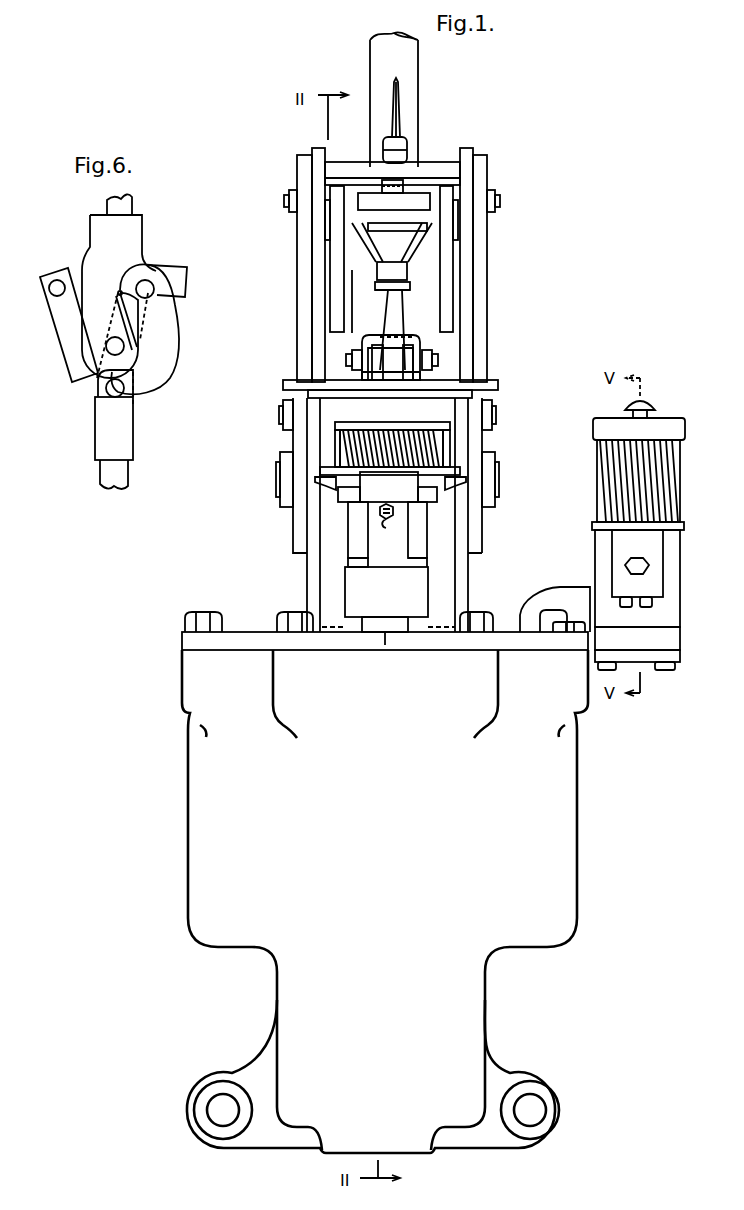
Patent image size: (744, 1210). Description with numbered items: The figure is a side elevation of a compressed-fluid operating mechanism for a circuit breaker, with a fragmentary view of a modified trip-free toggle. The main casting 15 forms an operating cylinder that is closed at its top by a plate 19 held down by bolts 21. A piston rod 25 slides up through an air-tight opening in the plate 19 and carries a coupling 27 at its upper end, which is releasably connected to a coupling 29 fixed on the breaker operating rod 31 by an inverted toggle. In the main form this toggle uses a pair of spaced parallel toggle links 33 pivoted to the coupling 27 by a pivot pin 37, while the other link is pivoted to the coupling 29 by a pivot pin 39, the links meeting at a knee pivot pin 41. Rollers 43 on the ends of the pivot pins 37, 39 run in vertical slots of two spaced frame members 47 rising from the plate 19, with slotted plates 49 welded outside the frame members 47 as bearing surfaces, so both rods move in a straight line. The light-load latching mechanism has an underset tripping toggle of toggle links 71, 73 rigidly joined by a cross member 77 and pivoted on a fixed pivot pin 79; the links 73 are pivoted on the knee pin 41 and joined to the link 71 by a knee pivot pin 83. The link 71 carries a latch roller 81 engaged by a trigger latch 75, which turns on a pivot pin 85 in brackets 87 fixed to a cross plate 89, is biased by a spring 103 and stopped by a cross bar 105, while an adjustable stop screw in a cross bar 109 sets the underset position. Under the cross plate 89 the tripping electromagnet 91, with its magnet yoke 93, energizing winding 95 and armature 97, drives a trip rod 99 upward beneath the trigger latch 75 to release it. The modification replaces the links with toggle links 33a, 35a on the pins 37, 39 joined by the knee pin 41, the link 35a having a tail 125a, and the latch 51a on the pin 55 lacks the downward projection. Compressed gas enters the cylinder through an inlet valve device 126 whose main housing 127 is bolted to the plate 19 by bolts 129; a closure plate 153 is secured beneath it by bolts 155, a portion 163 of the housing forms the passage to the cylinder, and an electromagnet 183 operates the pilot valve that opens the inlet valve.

In FIG. 1, the main casting 15 is at (196, 771).
In FIG. 1, the plate 19 is at (252, 621).
In FIG. 1, the bolts 21 is at (218, 615).
In FIG. 1, the piston rod 25 is at (402, 623).
In FIG. 6, the piston rod 25 is at (104, 478).
In FIG. 1, the coupling 27 is at (416, 581).
In FIG. 6, the coupling 27 is at (98, 438).
In FIG. 6, the coupling 29 is at (96, 229).
In FIG. 1, the breaker operating rod 31 is at (416, 128).
In FIG. 6, the breaker operating rod 31 is at (112, 205).
In FIG. 1, the toggle link 33 is at (350, 369).
In FIG. 6, the toggle link 33a is at (160, 388).
In FIG. 6, the toggle link 35a is at (120, 295).
In FIG. 1, the pivot pin 37 is at (344, 507).
In FIG. 6, the pivot pin 37 is at (100, 405).
In FIG. 1, the pivot pin 39 is at (493, 411).
In FIG. 6, the pivot pin 39 is at (126, 349).
In FIG. 1, the knee pivot pin 41 is at (450, 357).
In FIG. 6, the knee pivot pin 41 is at (174, 270).
In FIG. 1, the rollers 43 is at (496, 455).
In FIG. 1, the frame members 47 is at (306, 260).
In FIG. 1, the plates 49 is at (486, 228).
In FIG. 6, the latch 51a is at (72, 337).
In FIG. 6, the pin 55 is at (50, 293).
In FIG. 1, the toggle link 71 is at (430, 255).
In FIG. 1, the toggle link 73 is at (340, 291).
In FIG. 6, the toggle link 73 is at (172, 269).
In FIG. 1, the trigger latch 75 is at (397, 326).
In FIG. 1, the cross member 77 is at (372, 190).
In FIG. 1, the fixed pivot pin 79 is at (414, 195).
In FIG. 1, the latch roller 81 is at (404, 271).
In FIG. 1, the knee pivot pin 83 is at (402, 241).
In FIG. 1, the pivot pin 85 is at (432, 366).
In FIG. 1, the brackets 87 is at (404, 382).
In FIG. 1, the cross plate 89 is at (290, 386).
In FIG. 1, the tripping electromagnet 91 is at (367, 424).
In FIG. 1, the magnet yoke 93 is at (321, 423).
In FIG. 1, the energizing winding 95 is at (449, 409).
In FIG. 1, the armature 97 is at (326, 486).
In FIG. 1, the trip rod 99 is at (387, 511).
In FIG. 1, the spring 103 is at (358, 342).
In FIG. 1, the cross bar 105 is at (412, 290).
In FIG. 1, the cross bar 109 is at (370, 165).
In FIG. 6, the tail 125a is at (106, 393).
In FIG. 1, the inlet valve device 126 is at (724, 552).
In FIG. 1, the main housing 127 is at (666, 633).
In FIG. 1, the bolts 129 is at (546, 605).
In FIG. 1, the closure plate 153 is at (672, 653).
In FIG. 1, the bolts 155 is at (672, 670).
In FIG. 1, the portion of the housing 163 is at (556, 619).
In FIG. 1, the electromagnet 183 is at (678, 479).